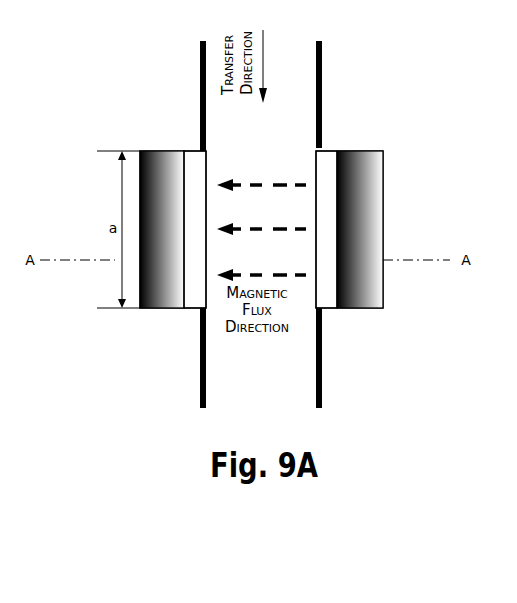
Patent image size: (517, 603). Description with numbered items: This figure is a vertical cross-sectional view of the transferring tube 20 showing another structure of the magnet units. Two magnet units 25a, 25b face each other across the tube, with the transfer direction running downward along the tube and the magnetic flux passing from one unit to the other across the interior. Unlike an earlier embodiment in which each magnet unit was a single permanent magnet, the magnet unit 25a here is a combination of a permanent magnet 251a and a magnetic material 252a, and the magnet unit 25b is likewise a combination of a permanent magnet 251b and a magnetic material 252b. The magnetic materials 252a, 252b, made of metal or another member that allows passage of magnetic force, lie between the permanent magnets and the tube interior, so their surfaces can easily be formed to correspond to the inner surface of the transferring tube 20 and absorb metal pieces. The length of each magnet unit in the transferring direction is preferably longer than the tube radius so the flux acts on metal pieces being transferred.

The transferring tube 20 is at (322, 61).
The magnet unit 25a is at (120, 112).
The permanent magnet 251a is at (163, 155).
The magnetic material 252a is at (193, 155).
The magnet unit 25b is at (323, 112).
The permanent magnet 251b is at (358, 155).
The magnetic material 252b is at (327, 155).